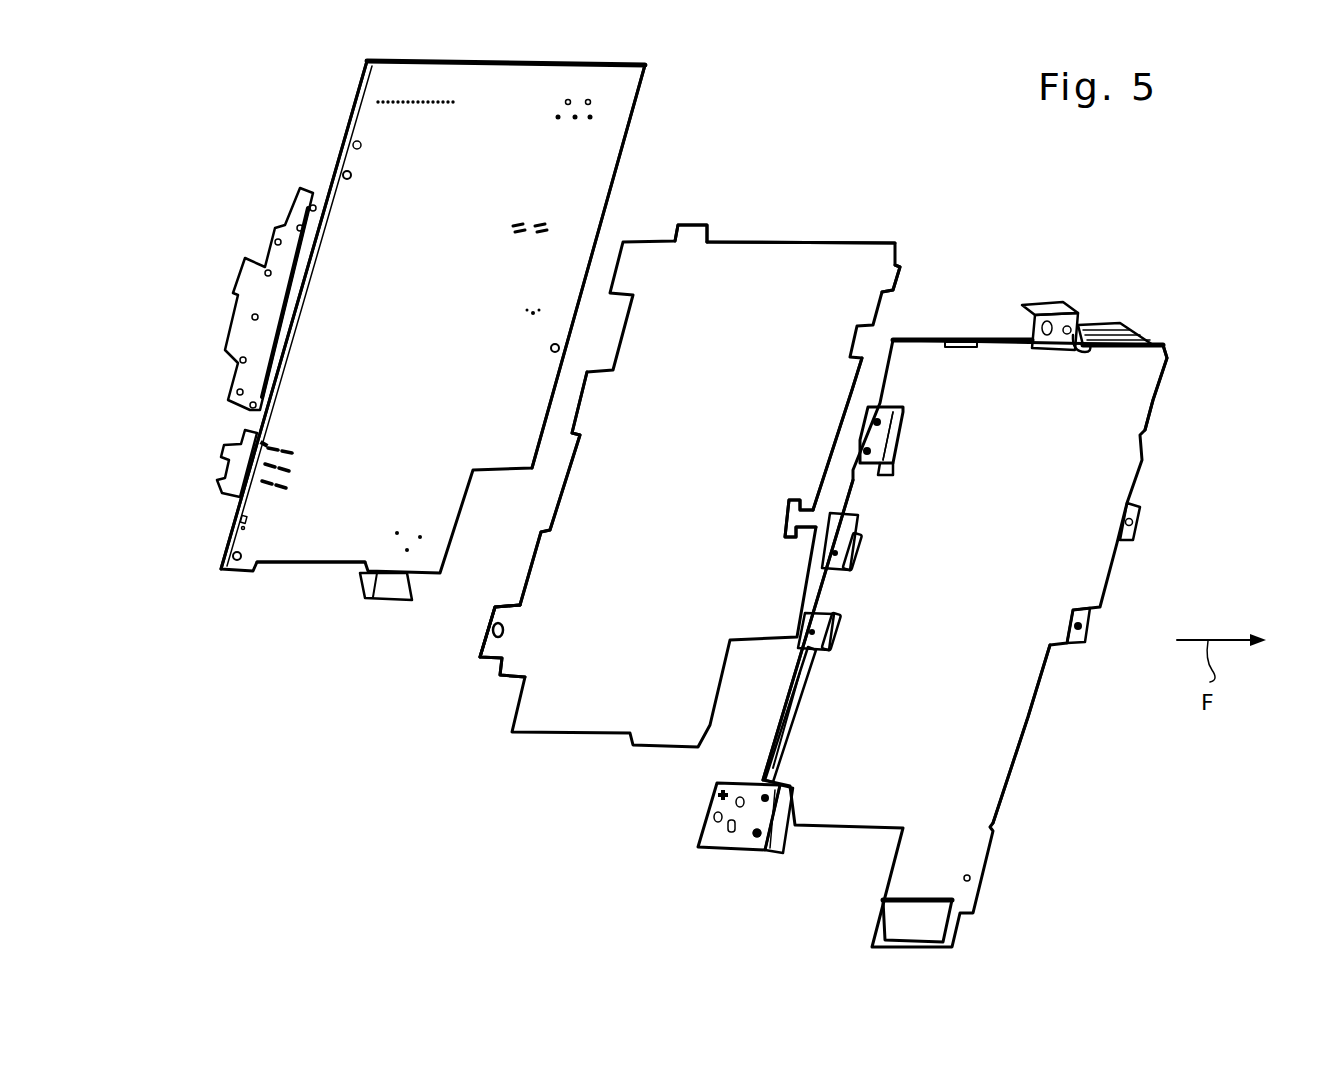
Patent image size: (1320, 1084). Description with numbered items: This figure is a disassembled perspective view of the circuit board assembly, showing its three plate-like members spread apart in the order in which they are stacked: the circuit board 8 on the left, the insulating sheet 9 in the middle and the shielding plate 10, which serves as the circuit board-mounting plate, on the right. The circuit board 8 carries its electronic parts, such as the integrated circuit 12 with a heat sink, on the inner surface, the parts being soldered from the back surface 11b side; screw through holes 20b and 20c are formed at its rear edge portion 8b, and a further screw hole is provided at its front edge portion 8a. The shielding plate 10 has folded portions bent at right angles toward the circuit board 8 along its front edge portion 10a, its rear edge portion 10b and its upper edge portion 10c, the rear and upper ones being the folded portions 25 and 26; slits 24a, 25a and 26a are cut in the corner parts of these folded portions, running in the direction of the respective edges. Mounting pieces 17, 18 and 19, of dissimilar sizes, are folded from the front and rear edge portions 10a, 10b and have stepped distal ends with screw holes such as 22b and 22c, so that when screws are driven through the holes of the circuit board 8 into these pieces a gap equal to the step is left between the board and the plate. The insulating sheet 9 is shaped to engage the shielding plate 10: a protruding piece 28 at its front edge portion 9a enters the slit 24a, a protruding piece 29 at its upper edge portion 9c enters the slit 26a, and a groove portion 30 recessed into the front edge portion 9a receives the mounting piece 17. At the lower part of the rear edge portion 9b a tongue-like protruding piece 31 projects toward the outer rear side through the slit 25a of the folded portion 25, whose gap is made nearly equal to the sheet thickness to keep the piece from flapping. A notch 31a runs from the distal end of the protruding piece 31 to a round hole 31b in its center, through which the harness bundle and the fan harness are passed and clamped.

The circuit board 8 is at (232, 604).
The front edge portion 8a is at (642, 97).
The rear edge portion 8b is at (348, 112).
The through hole 20b is at (343, 174).
The through hole 20c is at (233, 553).
The bottom edge connector 11b is at (310, 557).
The integrated circuit 12 is at (233, 333).
The insulating sheet 9 is at (836, 170).
The front edge portion 9a is at (860, 380).
The rear edge portion 9b is at (563, 496).
The upper edge portion 9c is at (768, 242).
The protruding piece 29 is at (693, 224).
The protruding piece 28 is at (898, 280).
The groove portion 30 is at (795, 498).
The protruding piece 31 is at (485, 660).
The notch 31a is at (490, 630).
The round hole 31b is at (497, 622).
The shielding plate 10 is at (1145, 321).
The front edge portion 10a is at (1030, 709).
The rear edge portion 10b is at (787, 700).
The upper edge portion 10c is at (993, 340).
The folded portion 26 is at (958, 340).
The slit 26a is at (952, 350).
The slit 24a is at (1158, 387).
The screw hole 22b is at (890, 424).
The mounting piece 18 is at (882, 432).
The mounting piece 17 is at (1086, 636).
The folded portion 25 is at (762, 758).
The slit 25a is at (787, 740).
The mounting piece 19 is at (713, 837).
The screw hole 22c is at (757, 840).